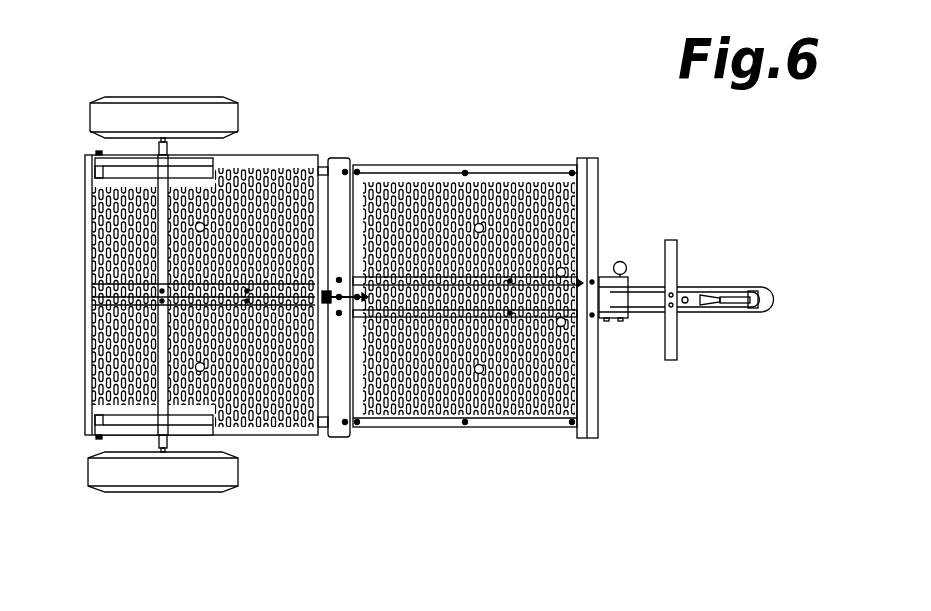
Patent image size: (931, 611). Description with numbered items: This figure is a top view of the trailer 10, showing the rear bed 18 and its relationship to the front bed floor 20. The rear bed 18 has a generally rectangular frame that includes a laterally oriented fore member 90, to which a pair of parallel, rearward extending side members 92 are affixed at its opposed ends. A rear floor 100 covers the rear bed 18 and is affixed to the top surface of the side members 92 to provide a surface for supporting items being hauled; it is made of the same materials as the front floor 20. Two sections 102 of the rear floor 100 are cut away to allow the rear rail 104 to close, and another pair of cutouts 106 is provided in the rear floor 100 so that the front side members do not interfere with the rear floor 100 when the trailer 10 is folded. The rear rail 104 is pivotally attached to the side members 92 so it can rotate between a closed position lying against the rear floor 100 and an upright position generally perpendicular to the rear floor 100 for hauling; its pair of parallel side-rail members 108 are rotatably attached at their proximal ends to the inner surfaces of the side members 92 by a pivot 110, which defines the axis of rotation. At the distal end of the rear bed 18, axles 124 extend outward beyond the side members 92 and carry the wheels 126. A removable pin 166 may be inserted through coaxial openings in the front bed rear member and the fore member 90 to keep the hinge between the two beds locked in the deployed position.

The trailer 10 is at (533, 78).
The rear bed 18 is at (290, 440).
The floor 20 is at (513, 232).
The fore member 90 is at (332, 350).
The side members 92 is at (192, 162).
The rear floor 100 is at (283, 205).
The sections 102 is at (123, 168).
The rear rail 104 is at (82, 224).
The cutouts 106 is at (333, 160).
The side-rail members 108 is at (75, 159).
The pivot 110 is at (100, 153).
The axles 124 is at (165, 142).
The wheels 126 is at (175, 97).
The removable pin 166 is at (352, 295).